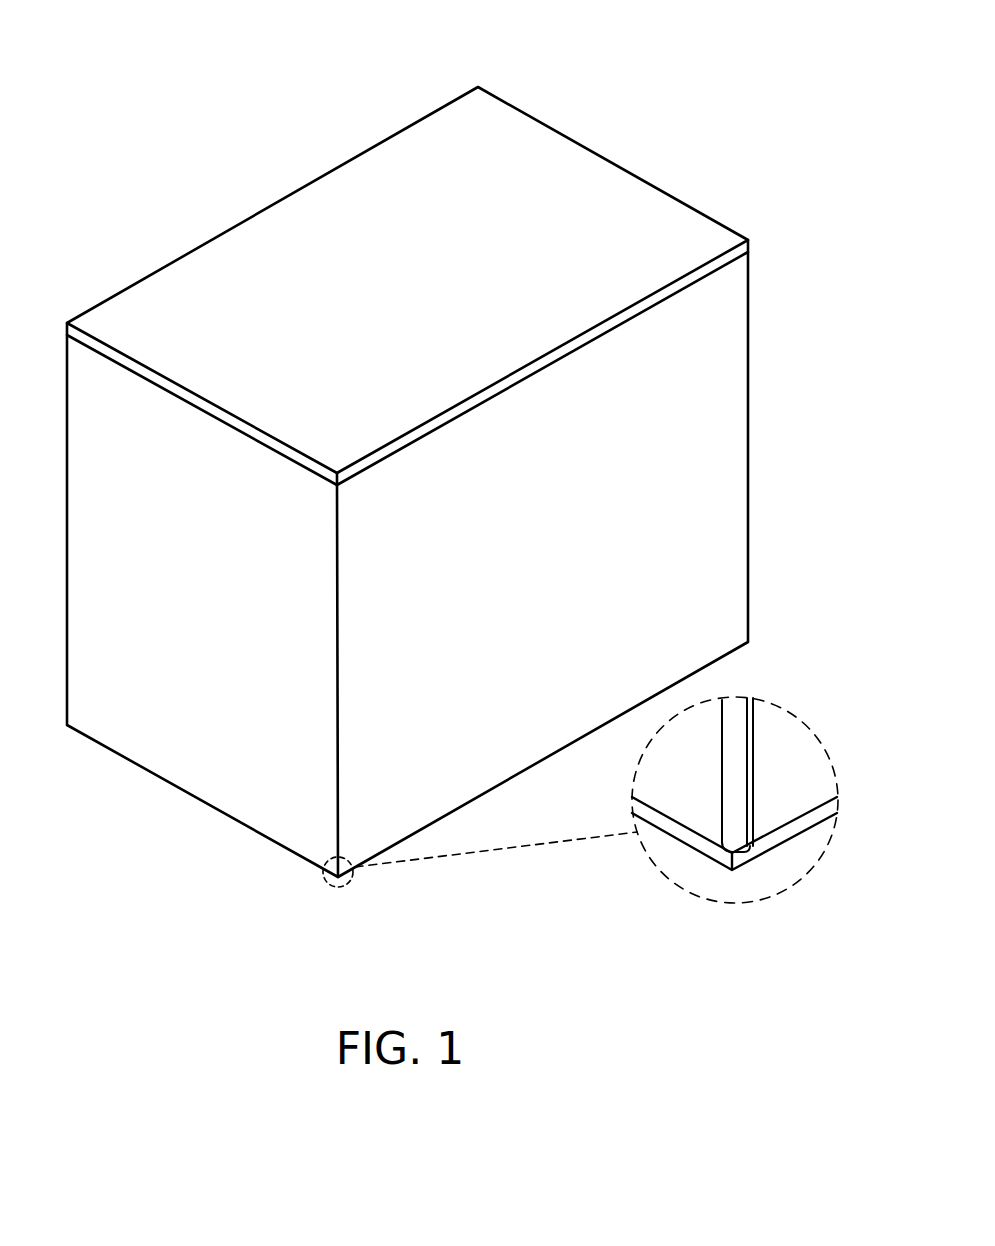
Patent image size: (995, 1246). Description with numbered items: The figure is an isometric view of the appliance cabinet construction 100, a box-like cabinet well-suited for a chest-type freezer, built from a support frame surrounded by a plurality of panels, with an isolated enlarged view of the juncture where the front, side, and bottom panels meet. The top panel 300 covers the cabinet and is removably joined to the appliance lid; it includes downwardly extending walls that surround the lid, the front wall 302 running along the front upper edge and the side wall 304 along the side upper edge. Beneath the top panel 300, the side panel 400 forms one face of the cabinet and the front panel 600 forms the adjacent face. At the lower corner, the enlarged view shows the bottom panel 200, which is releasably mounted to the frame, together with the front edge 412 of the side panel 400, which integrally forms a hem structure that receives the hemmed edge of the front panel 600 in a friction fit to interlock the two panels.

The appliance cabinet construction 100 is at (237, 114).
The bottom panel 200 is at (793, 820).
The top panel 300 is at (599, 180).
The front wall 302 is at (476, 400).
The side wall 304 is at (204, 404).
The side panel 400 is at (179, 758).
The front edge 412 is at (730, 810).
The front panel 600 is at (713, 397).